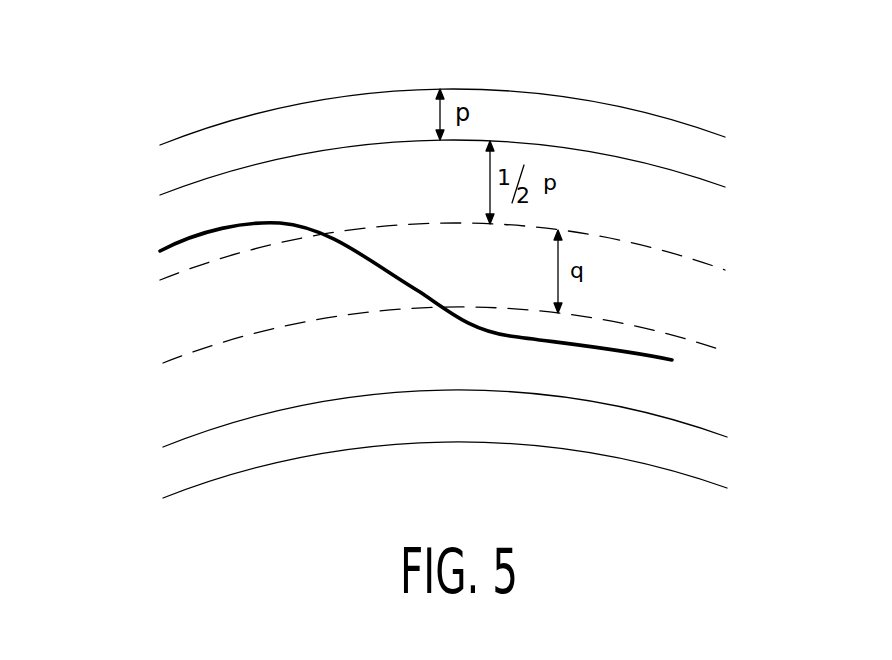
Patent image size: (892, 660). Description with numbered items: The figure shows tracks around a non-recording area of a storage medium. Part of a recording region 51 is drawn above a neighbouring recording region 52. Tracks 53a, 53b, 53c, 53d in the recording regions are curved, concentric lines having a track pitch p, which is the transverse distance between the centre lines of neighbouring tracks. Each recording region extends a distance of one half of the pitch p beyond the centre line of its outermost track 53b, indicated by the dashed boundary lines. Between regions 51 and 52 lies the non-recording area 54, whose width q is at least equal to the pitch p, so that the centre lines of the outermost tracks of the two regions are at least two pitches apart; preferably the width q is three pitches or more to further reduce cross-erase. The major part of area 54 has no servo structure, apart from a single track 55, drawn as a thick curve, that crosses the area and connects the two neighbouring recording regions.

The recording region 51 is at (740, 137).
The neighbouring recording region 52 is at (742, 359).
The track 53a is at (587, 100).
The outermost track 53b is at (642, 162).
The track 53c is at (593, 401).
The track 53d is at (657, 467).
The non-recording area 54 is at (742, 276).
The connecting track 55 is at (173, 243).